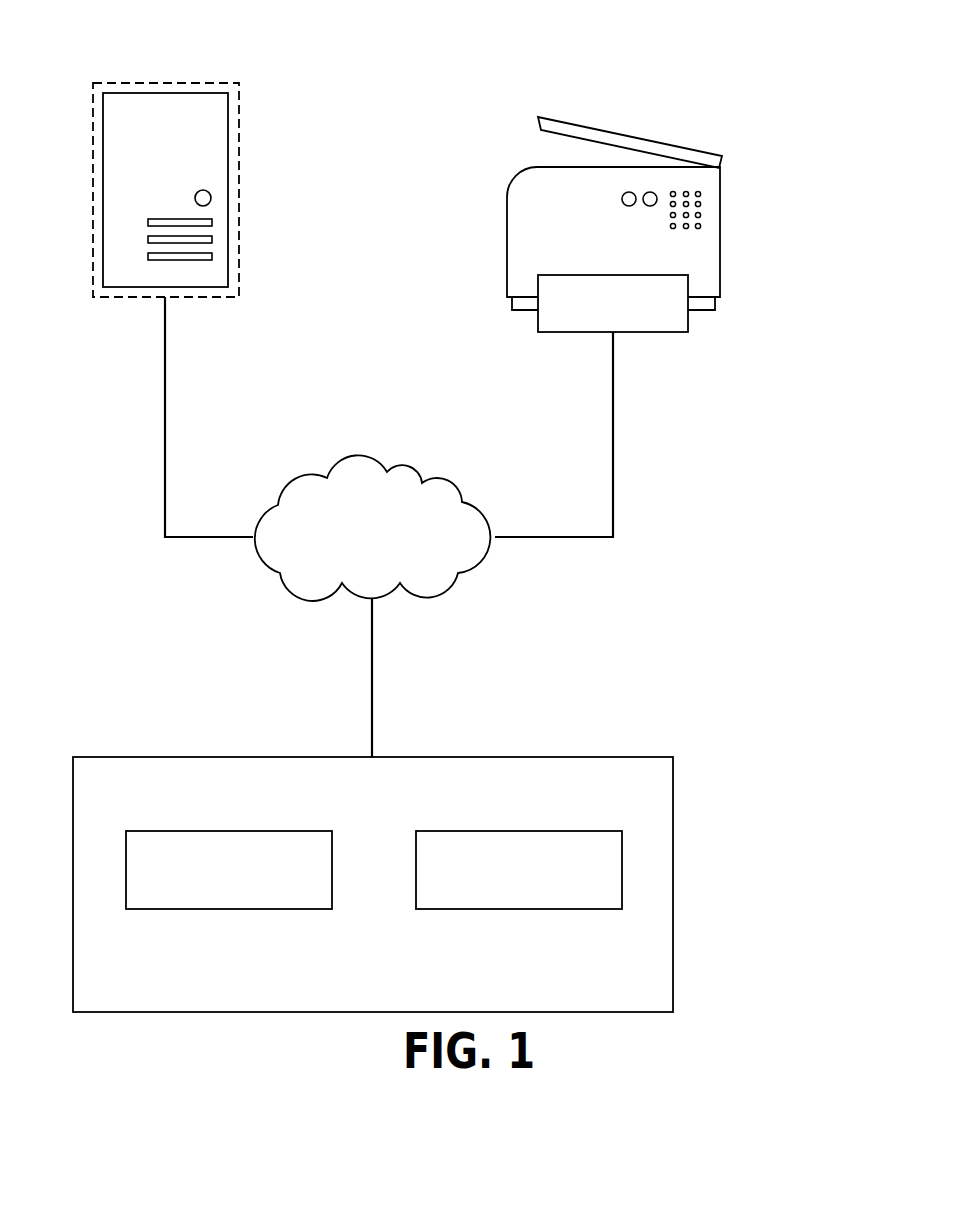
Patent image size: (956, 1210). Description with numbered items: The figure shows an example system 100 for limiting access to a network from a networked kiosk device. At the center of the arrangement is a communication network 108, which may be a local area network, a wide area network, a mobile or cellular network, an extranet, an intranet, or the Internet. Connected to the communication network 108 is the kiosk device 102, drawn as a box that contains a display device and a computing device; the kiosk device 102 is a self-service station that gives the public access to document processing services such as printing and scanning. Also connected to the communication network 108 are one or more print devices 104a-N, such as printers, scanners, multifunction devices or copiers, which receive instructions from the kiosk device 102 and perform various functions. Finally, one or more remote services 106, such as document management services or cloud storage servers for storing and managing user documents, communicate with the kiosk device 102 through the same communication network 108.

The system 100 is at (420, 67).
The kiosk device 102 is at (373, 884).
The print devices 104a-N is at (720, 250).
The remote services 106 is at (118, 200).
The communication network 108 is at (347, 546).